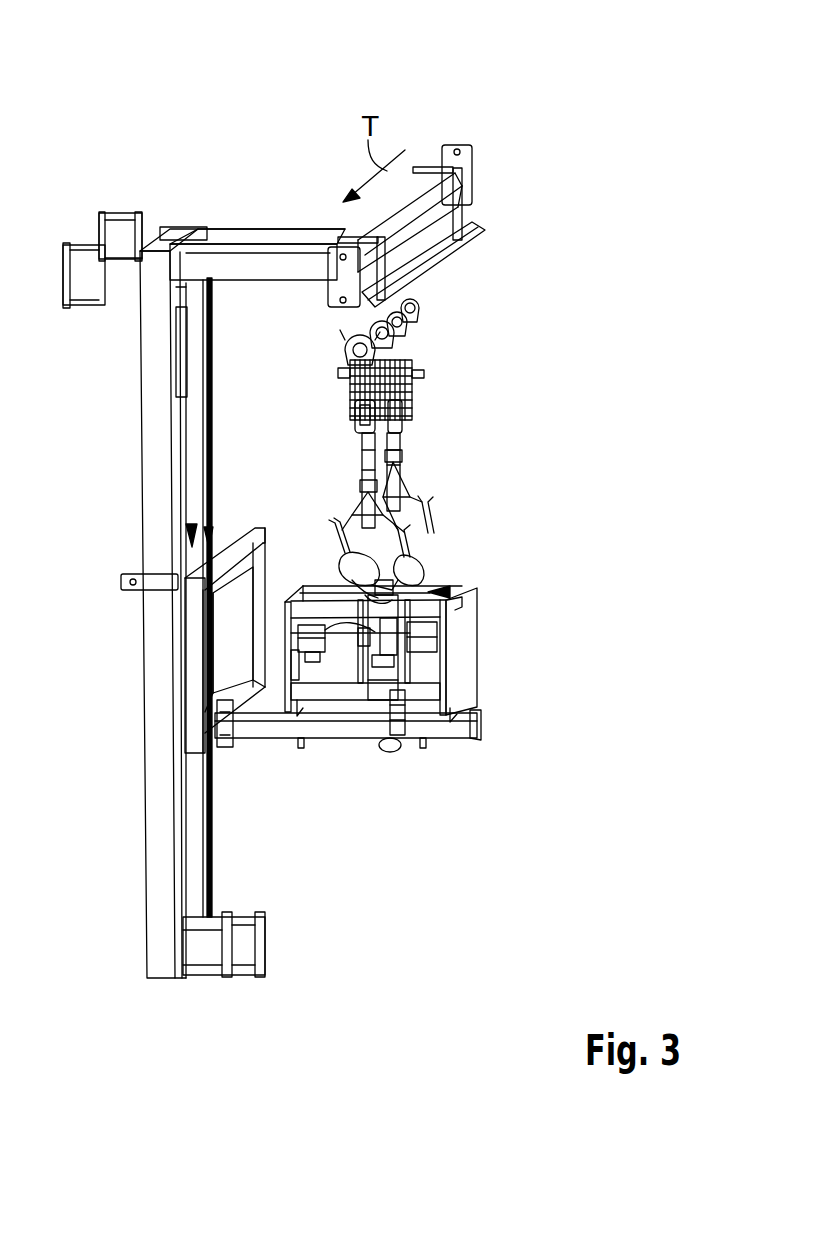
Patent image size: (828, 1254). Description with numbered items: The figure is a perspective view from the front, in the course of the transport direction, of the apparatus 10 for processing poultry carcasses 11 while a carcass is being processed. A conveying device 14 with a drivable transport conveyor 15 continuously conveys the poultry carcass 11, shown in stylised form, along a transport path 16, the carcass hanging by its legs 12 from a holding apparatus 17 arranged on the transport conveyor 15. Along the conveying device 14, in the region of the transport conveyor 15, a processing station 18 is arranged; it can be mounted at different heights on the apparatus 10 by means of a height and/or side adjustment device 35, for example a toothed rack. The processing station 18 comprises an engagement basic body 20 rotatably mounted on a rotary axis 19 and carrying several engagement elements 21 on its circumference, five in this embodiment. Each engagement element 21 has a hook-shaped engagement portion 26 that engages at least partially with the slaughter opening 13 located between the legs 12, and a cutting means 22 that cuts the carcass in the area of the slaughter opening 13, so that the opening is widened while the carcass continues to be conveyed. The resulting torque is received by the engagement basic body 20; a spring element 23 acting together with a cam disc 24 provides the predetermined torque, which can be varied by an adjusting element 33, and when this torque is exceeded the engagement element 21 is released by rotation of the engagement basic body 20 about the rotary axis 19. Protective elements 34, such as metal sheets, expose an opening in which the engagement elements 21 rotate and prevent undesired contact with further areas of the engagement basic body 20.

The apparatus 10 is at (120, 120).
The poultry carcass 11 is at (398, 572).
The legs 12 is at (410, 542).
The slaughter opening 13 is at (392, 590).
The conveying device 14 is at (474, 311).
The transport conveyor 15 is at (407, 352).
The transport path 16 is at (483, 244).
The holding apparatus 17 is at (395, 515).
The processing station 18 is at (498, 786).
The rotary axis 19 is at (375, 632).
The engagement basic body 20 is at (387, 642).
The engagement element 21 is at (375, 585).
The cutting means 22 is at (380, 600).
The spring element 23 is at (412, 720).
The cam disc 24 is at (443, 633).
The hook-shaped engagement portion 26 is at (367, 636).
The adjusting element 33 is at (389, 752).
The protective elements 34 is at (450, 593).
The height and/or side adjustment device 35 is at (178, 507).